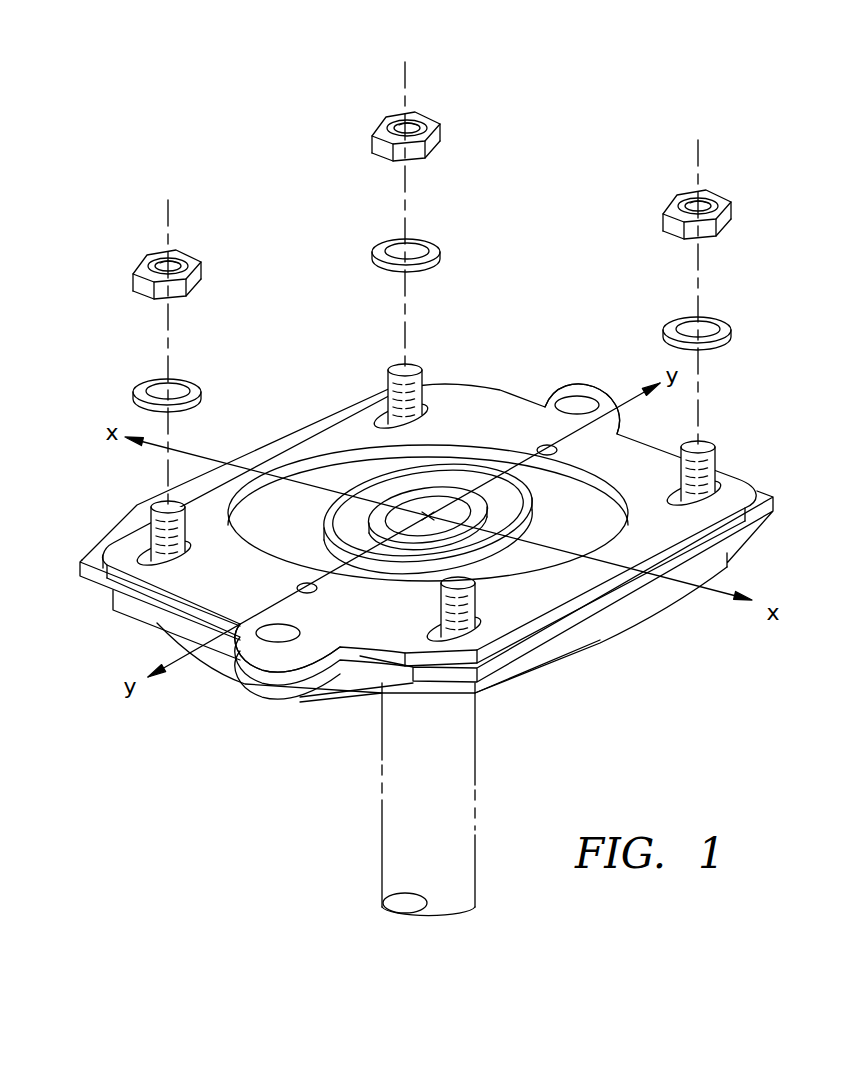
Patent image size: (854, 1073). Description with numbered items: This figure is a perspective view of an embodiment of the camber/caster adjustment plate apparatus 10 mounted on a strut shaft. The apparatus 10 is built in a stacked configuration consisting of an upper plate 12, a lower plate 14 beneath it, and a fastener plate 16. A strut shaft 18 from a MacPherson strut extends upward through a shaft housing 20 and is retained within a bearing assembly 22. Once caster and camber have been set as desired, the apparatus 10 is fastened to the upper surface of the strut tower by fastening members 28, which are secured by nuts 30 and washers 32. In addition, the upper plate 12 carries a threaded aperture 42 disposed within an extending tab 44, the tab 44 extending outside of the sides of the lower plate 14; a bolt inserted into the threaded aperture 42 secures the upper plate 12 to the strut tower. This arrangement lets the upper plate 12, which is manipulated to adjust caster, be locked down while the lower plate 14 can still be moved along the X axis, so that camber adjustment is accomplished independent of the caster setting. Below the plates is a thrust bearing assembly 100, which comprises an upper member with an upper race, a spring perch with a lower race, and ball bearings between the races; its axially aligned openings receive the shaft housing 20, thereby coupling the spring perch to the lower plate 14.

The camber/caster adjustment plate apparatus 10 is at (257, 197).
The upper plate 12 is at (122, 538).
The lower plate 14 is at (90, 580).
The fastener plate 16 is at (113, 610).
The strut shaft 18 is at (382, 800).
The shaft housing 20 is at (478, 468).
The bearing assembly 22 is at (437, 496).
The fastening members 28 is at (717, 466).
The nuts 30 is at (722, 223).
The washers 32 is at (720, 342).
The threaded aperture 42 is at (572, 402).
The extending tab 44 is at (620, 392).
The thrust bearing assembly 100 is at (173, 643).